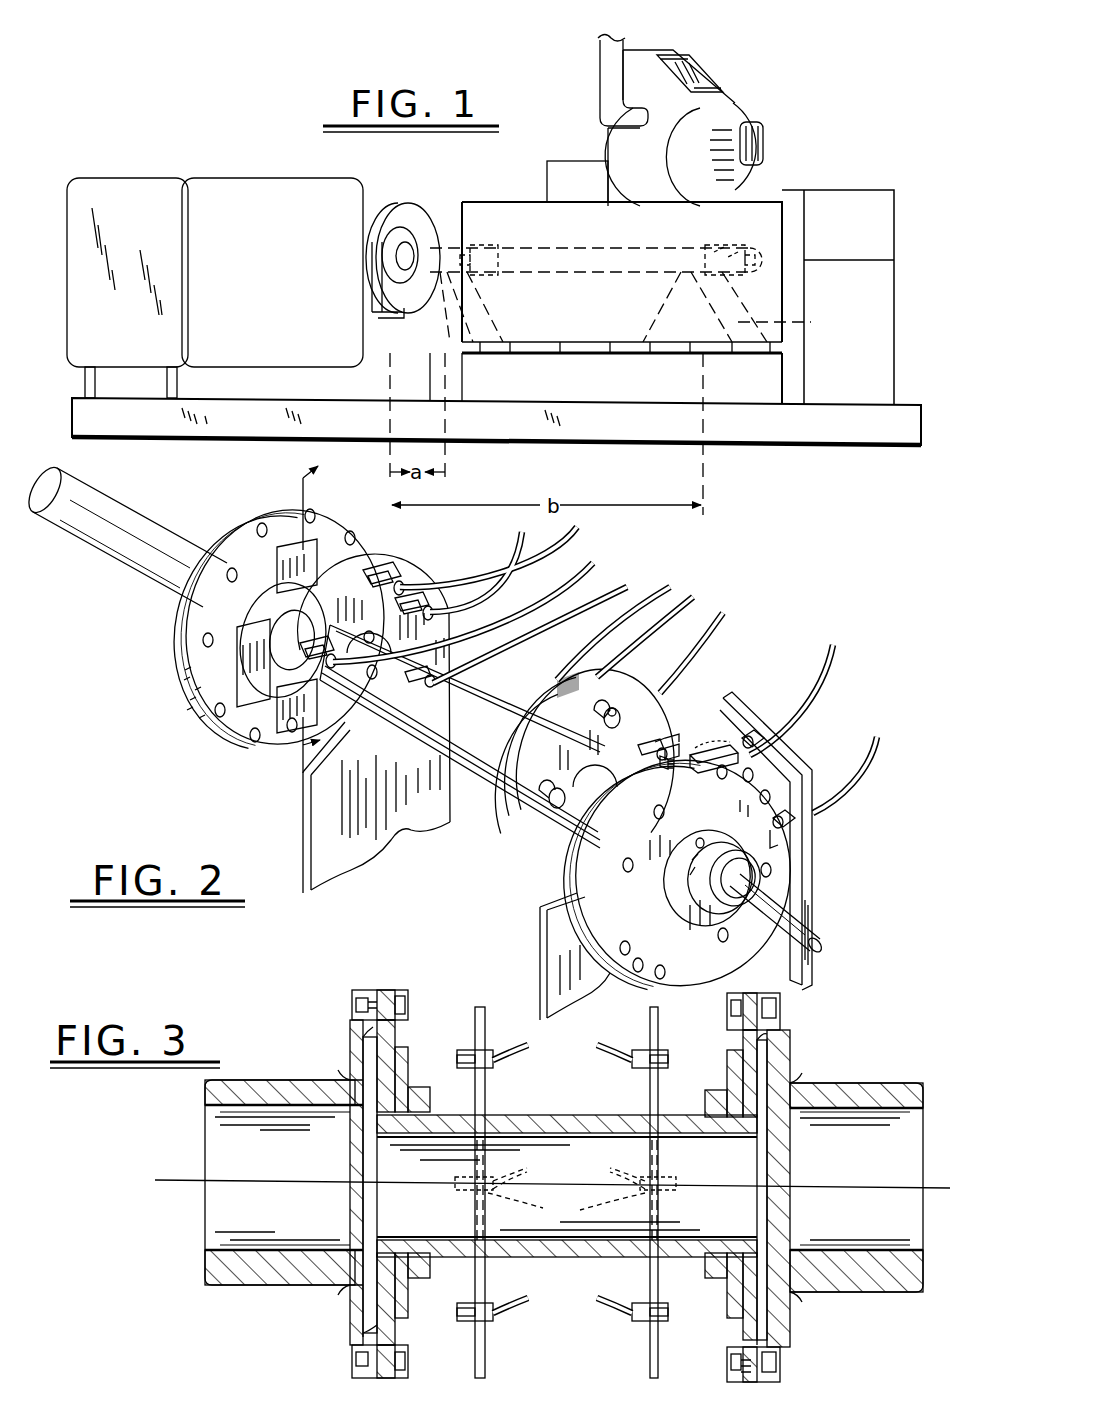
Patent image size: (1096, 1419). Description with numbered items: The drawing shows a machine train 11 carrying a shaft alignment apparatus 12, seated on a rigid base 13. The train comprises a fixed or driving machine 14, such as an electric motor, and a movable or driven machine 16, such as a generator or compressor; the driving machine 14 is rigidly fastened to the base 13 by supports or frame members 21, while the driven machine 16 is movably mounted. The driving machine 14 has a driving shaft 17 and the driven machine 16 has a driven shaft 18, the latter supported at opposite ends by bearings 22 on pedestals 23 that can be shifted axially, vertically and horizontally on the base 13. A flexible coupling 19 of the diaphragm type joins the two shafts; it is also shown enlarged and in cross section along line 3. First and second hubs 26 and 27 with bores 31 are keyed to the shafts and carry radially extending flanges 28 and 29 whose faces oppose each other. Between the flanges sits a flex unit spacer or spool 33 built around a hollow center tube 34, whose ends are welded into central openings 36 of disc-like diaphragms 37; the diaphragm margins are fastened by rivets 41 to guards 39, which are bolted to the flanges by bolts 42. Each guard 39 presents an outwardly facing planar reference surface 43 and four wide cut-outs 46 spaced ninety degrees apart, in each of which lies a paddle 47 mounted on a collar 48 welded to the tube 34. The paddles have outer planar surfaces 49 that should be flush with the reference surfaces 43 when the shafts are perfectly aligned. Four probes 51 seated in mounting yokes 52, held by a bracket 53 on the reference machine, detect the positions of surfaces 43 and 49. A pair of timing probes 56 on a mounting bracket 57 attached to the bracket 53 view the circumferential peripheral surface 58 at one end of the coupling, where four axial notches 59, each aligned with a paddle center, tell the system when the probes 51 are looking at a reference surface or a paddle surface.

In FIG. 1, the machine train 11 is at (448, 202).
In FIG. 1, the shaft alignment apparatus 12 is at (382, 206).
In FIG. 3, the shaft alignment apparatus 12 is at (438, 955).
In FIG. 1, the base 13 is at (287, 438).
In FIG. 1, the driving machine 14 is at (254, 178).
In FIG. 1, the driven machine 16 is at (484, 216).
In FIG. 2, the driving shaft 17 is at (85, 498).
In FIG. 1, the driven shaft 18 is at (556, 270).
In FIG. 2, the driven shaft 18 is at (803, 917).
In FIG. 3, the flexible coupling 19 is at (298, 993).
In FIG. 1, the supports or frame members 21 is at (226, 396).
In FIG. 1, the bearings 22 is at (720, 258).
In FIG. 1, the pedestals 23 is at (641, 307).
In FIG. 3, the first hub 26 is at (264, 1278).
In FIG. 3, the second hub 27 is at (882, 1284).
In FIG. 3, the flange 28 is at (352, 1290).
In FIG. 3, the flange 29 is at (777, 1310).
In FIG. 3, the bores 31 is at (210, 1110).
In FIG. 3, the flex unit spacer or spool 33 is at (573, 1265).
In FIG. 2, the center tube 34 is at (480, 734).
In FIG. 3, the center tube 34 is at (534, 1116).
In FIG. 3, the openings 36 is at (383, 1259).
In FIG. 3, the diaphragms 37 is at (398, 1080).
In FIG. 3, the guards 39 is at (726, 1032).
In FIG. 2, the rivets 41 is at (727, 993).
In FIG. 3, the rivets 41 is at (727, 1018).
In FIG. 3, the bolts 42 is at (408, 1007).
In FIG. 2, the planar reference surfaces 43 is at (254, 746).
In FIG. 2, the cut-outs 46 is at (227, 734).
In FIG. 2, the paddle 47 is at (280, 560).
In FIG. 2, the collar 48 is at (280, 646).
In FIG. 2, the outer planar surfaces 49 is at (285, 555).
In FIG. 2, the probes 51 is at (397, 568).
In FIG. 3, the probes 51 is at (486, 1039).
In FIG. 2, the mounting yoke 52 is at (382, 860).
In FIG. 3, the mounting yoke 52 is at (485, 1346).
In FIG. 1, the bracket 53 is at (378, 318).
In FIG. 2, the timing probes 56 is at (752, 731).
In FIG. 2, the mounting bracket 57 is at (792, 752).
In FIG. 2, the circumferential peripheral surface 58 is at (710, 755).
In FIG. 2, the notches 59 is at (680, 752).
In FIG. 2, the section line 3 is at (303, 620).